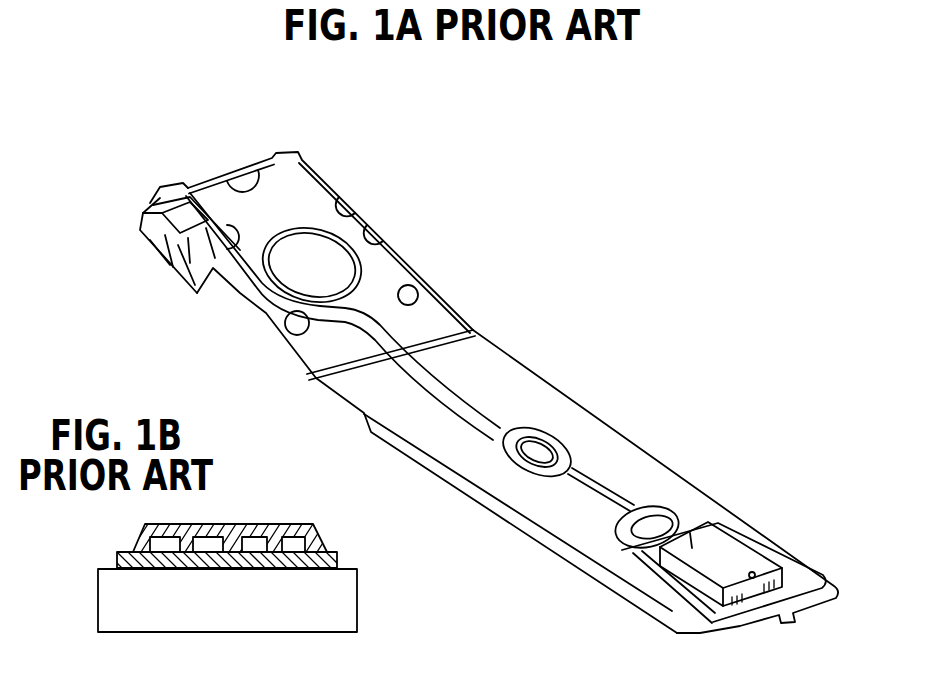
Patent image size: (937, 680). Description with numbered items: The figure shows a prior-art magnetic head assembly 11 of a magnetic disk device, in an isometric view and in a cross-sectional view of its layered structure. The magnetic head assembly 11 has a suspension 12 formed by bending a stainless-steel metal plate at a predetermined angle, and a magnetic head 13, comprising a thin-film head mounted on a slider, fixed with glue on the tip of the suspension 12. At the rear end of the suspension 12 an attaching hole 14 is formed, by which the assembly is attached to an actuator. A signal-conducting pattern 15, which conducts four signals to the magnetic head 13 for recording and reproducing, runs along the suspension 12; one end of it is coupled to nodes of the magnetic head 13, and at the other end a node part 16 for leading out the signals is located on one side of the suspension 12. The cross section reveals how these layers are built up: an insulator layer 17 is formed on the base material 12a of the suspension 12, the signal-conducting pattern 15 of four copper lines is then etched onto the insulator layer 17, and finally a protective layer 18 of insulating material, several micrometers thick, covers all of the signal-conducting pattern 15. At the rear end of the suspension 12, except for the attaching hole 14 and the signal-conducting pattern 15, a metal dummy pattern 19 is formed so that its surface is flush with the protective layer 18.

In FIG. 1A, the magnetic head assembly 11 is at (560, 190).
In FIG. 1A, the suspension 12 is at (502, 347).
In FIG. 1B, the base material 12a is at (342, 612).
In FIG. 1A, the magnetic head 13 is at (737, 537).
In FIG. 1A, the attaching hole 14 is at (320, 258).
In FIG. 1A, the signal-conducting pattern 15 is at (497, 418).
In FIG. 1B, the signal-conducting pattern 15 is at (302, 547).
In FIG. 1A, the node part 16 is at (137, 232).
In FIG. 1B, the insulator layer 17 is at (328, 562).
In FIG. 1B, the protective layer 18 is at (260, 524).
In FIG. 1A, the metal dummy pattern 19 is at (313, 180).